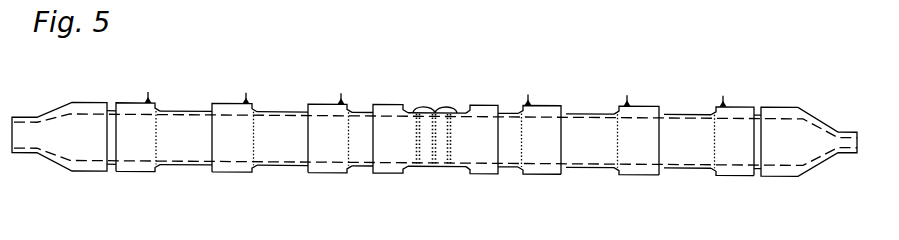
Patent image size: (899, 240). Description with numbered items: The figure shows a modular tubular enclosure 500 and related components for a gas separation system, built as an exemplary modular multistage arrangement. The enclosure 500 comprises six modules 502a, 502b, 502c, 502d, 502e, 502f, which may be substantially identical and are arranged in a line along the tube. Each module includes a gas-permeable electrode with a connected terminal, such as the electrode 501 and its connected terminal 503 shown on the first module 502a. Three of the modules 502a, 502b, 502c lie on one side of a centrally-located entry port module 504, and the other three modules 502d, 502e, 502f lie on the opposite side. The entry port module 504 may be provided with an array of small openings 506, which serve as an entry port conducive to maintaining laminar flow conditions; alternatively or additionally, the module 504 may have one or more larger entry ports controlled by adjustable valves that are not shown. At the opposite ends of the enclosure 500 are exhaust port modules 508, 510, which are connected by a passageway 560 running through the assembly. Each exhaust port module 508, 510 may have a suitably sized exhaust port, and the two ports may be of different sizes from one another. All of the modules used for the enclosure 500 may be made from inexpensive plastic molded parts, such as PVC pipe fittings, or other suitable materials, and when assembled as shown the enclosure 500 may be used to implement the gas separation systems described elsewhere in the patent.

The modular tubular enclosure 500 is at (263, 38).
The gas-permeable electrode 501 is at (155, 128).
The module 502a is at (133, 171).
The module 502b is at (230, 171).
The module 502c is at (323, 172).
The module 502d is at (538, 173).
The module 502e is at (638, 174).
The module 502f is at (726, 175).
The terminal 503 is at (148, 99).
The entry port module 504 is at (473, 104).
The array of small openings 506 is at (435, 124).
The exhaust port module 508 is at (52, 162).
The exhaust port module 510 is at (788, 108).
The passageway 560 is at (585, 140).